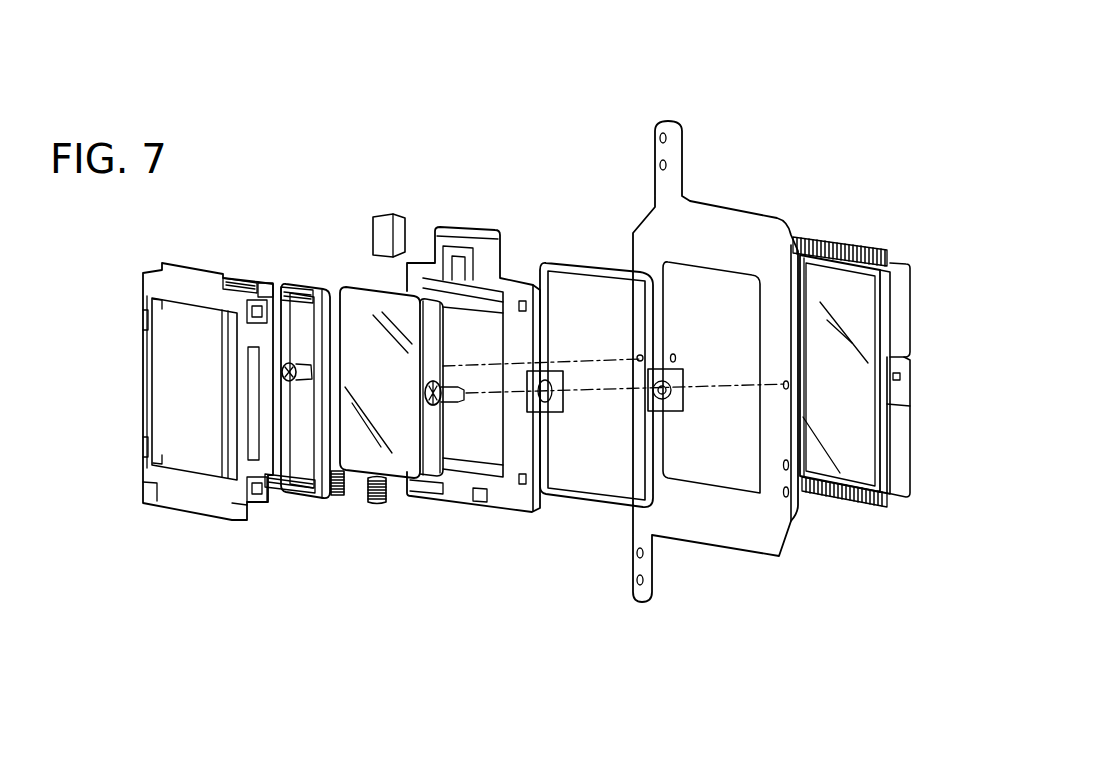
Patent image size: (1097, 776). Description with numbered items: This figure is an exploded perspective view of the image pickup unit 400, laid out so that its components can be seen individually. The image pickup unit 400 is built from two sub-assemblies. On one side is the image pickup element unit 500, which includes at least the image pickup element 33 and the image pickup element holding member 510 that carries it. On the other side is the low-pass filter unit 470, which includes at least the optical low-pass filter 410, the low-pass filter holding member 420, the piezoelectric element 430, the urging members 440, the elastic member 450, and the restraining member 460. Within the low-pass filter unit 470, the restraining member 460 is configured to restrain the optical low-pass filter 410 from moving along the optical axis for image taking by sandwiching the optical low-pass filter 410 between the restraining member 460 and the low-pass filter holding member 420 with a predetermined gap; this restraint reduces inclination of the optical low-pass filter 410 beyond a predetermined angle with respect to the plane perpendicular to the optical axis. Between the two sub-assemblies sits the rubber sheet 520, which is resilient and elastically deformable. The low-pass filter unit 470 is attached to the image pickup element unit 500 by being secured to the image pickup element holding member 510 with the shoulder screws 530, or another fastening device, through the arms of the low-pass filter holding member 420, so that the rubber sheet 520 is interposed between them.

The image pickup unit 400 is at (858, 90).
The image pickup element unit 500 is at (845, 136).
The image pickup element holding member 510 is at (743, 238).
The image pickup element 33 is at (833, 290).
The rubber sheet 520 is at (587, 270).
The shoulder screws 530 is at (290, 362).
The restraining member 460 is at (220, 503).
The elastic member 450 is at (295, 496).
The urging members 440 is at (333, 496).
The optical low-pass filter 410 is at (418, 375).
The piezoelectric element 430 is at (443, 407).
The low-pass filter holding member 420 is at (518, 508).
The low-pass filter unit 470 is at (545, 624).